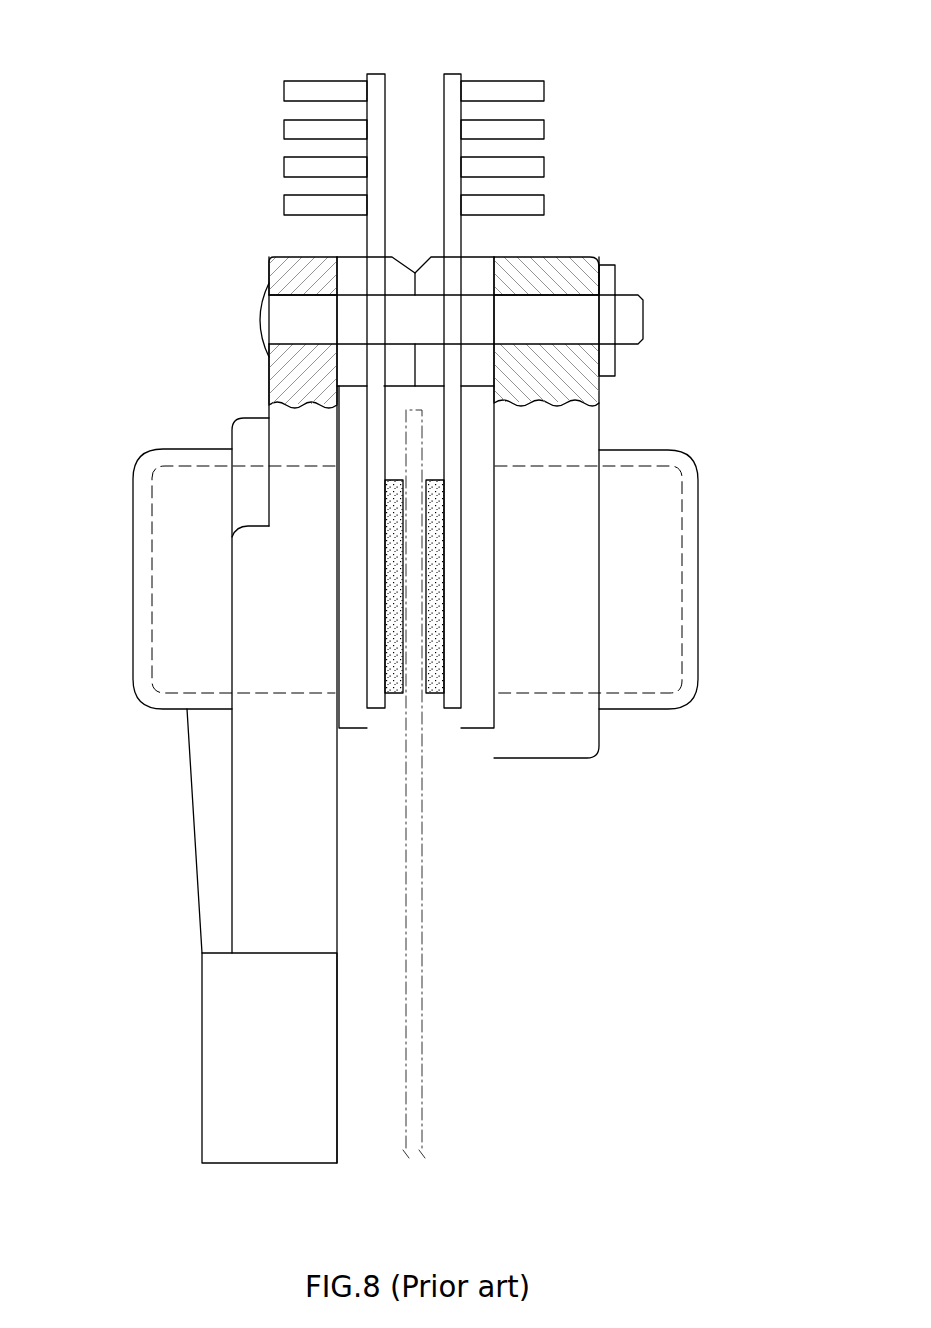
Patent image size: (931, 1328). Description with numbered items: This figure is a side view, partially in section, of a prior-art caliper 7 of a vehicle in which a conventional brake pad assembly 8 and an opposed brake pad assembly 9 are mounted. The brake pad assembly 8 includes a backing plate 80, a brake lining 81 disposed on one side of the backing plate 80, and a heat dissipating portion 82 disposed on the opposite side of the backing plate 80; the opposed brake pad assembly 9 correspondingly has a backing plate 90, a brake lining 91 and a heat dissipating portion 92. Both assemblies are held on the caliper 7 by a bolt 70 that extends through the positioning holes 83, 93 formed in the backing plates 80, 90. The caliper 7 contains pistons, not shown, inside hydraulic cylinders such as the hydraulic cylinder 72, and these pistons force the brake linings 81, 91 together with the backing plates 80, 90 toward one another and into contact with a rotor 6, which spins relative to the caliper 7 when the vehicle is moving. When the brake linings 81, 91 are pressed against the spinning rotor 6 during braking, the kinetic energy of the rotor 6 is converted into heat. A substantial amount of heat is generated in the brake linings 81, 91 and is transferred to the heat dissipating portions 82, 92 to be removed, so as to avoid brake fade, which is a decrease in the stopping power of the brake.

The rotor 6 is at (422, 993).
The caliper 7 is at (676, 428).
The bolt 70 is at (633, 320).
The hydraulic cylinder 72 is at (135, 578).
The brake pad assembly 8 is at (282, 356).
The backing plate 80 is at (376, 78).
The brake lining 81 is at (400, 695).
The heat dissipating portion 82 is at (270, 87).
The positioning hole 83 is at (375, 297).
The opposed brake pad assembly 9 is at (547, 354).
The backing plate 90 is at (452, 78).
The brake lining 91 is at (431, 695).
The heat dissipating portion 92 is at (558, 87).
The positioning hole 93 is at (445, 297).